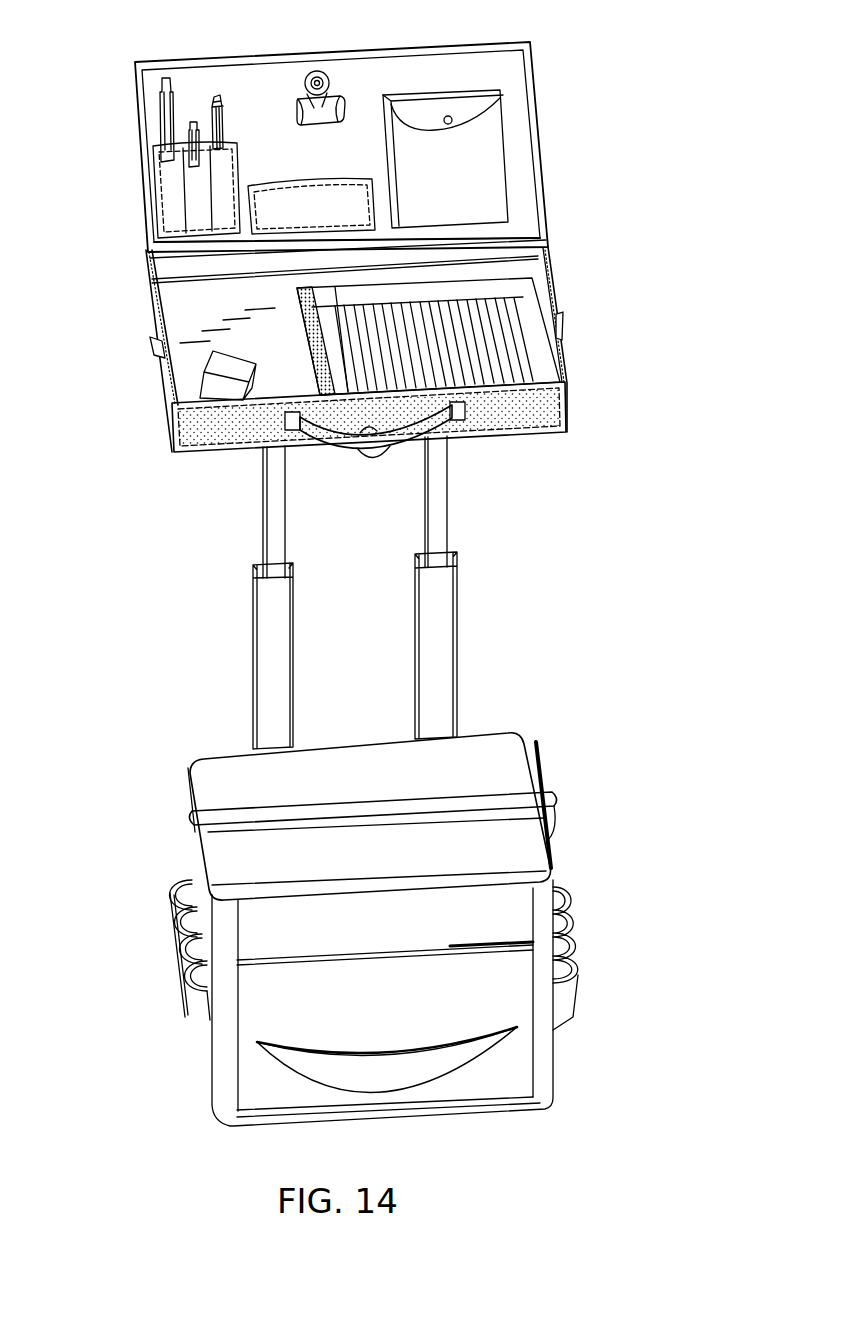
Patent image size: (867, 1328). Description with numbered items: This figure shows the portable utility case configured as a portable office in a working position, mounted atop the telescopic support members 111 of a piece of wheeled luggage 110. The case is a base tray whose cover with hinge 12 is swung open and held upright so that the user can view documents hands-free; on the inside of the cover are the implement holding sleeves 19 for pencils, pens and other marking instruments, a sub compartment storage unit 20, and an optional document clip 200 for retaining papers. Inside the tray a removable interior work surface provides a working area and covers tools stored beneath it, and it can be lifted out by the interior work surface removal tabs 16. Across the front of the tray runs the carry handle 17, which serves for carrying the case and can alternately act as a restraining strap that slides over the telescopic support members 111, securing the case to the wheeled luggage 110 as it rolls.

The cover with hinge 12 is at (476, 41).
The optional document clip 200 is at (322, 73).
The implement holding sleeves 19 is at (168, 172).
The sub compartment storage unit 20 is at (498, 160).
The interior work surface removal tabs 16 is at (150, 340).
The carry handle 17 is at (445, 428).
The telescopic support members 111 is at (427, 633).
The wheeled luggage 110 is at (538, 763).